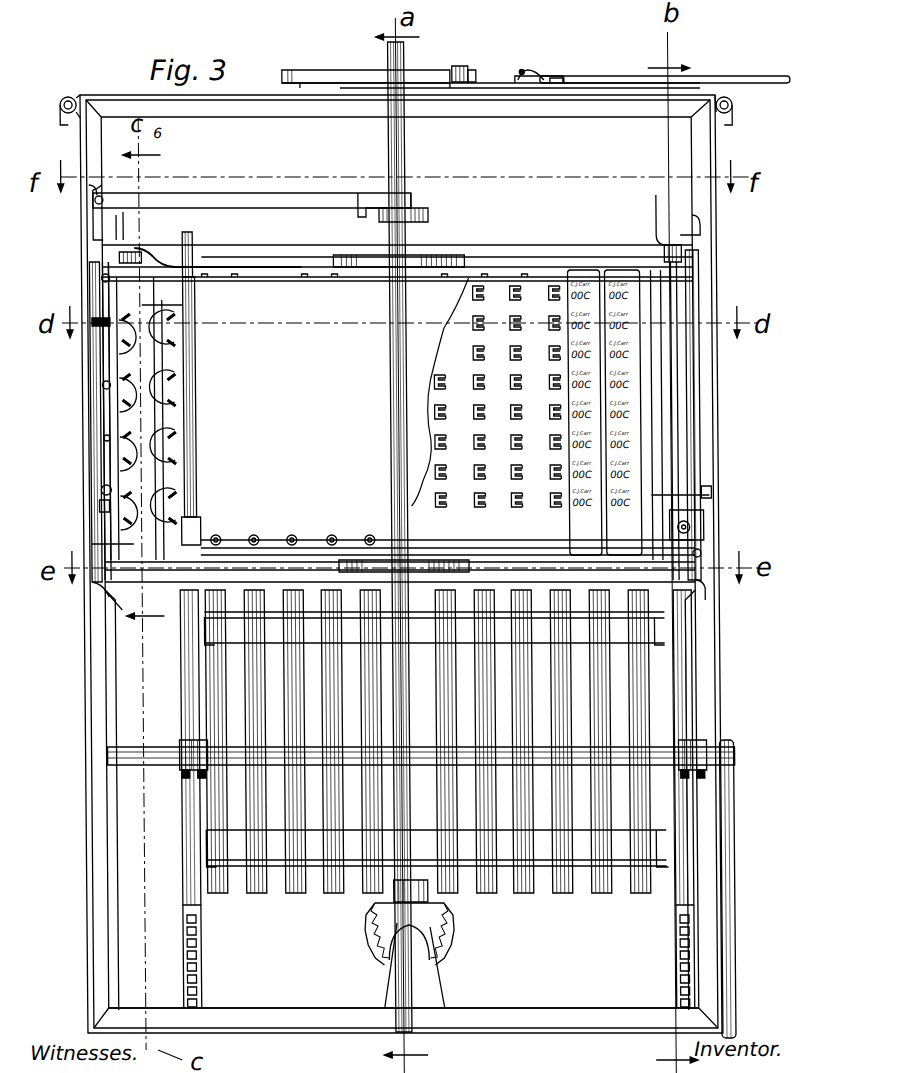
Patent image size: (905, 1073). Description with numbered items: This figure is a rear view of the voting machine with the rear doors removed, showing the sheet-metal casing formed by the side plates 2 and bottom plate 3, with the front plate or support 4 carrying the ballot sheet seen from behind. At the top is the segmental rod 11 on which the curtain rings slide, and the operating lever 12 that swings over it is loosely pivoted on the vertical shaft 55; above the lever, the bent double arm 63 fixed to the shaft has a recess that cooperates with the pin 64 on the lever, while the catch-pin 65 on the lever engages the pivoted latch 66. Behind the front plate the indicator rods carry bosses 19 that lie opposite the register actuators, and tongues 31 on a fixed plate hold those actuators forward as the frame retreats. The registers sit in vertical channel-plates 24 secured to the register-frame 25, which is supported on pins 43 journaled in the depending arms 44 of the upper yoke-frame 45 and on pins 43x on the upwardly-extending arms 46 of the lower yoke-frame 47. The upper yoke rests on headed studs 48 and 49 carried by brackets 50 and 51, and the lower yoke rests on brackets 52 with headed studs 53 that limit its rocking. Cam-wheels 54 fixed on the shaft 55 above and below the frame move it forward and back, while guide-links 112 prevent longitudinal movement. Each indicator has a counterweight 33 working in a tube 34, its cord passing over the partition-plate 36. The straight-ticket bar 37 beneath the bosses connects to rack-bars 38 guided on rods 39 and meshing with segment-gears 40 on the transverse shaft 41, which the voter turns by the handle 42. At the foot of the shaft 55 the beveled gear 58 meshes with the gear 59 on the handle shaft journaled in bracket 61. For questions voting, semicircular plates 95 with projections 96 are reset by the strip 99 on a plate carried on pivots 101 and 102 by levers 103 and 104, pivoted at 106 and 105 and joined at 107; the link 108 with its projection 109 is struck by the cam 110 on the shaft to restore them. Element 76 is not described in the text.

The side plates 2 is at (86, 792).
The bottom plate 3 is at (308, 1030).
The plate or support 4 is at (447, 416).
The segmental rod 11 is at (72, 97).
The operating arm or lever 12 is at (714, 84).
The boss or abutment 19 is at (293, 527).
The channel-plate 24 is at (604, 412).
The register-frame 25 is at (352, 278).
The tongues 31 is at (440, 406).
The counterweight 33 is at (228, 570).
The tube 34 is at (250, 700).
The partition-plate 36 is at (230, 664).
The straight-ticket bar 37 is at (430, 550).
The rack-bars 38 is at (194, 942).
The rods 39 is at (194, 382).
The segment-gears 40 is at (190, 910).
The shaft 41 is at (160, 766).
The handle 42 is at (728, 868).
The pins 43 is at (84, 306).
The pins 43x is at (722, 458).
The depending arms 44 is at (88, 266).
The upper yoke-frame 45 is at (542, 246).
The upwardly-extending arms 46 is at (96, 540).
The lower yoke-frame 47 is at (270, 562).
The headed stud 48 is at (662, 250).
The headed stud 49 is at (132, 250).
The bracket 50 is at (656, 205).
The bracket 51 is at (123, 223).
The brackets 52 is at (110, 598).
The headed studs 53 is at (704, 584).
The cam-wheels 54 is at (454, 256).
The vertical shaft 55 is at (406, 154).
The beveled gear 58 is at (424, 906).
The gear 59 is at (438, 940).
The bracket 61 is at (424, 990).
The double arm 63 is at (302, 72).
The pin 64 is at (460, 66).
The catch-pin 65 is at (524, 70).
The pivoted latch 66 is at (542, 78).
The lock box 76 is at (700, 518).
The semicircular plates 95 is at (144, 320).
The projections 96 is at (172, 318).
The resetting strip or plate 99 is at (175, 424).
The pivot 101 is at (100, 279).
The pivot 102 is at (98, 490).
The lever 103 is at (92, 218).
The lever 104 is at (104, 458).
The pivot 105 is at (100, 438).
The pivot 106 is at (96, 328).
The pivot 107 is at (100, 388).
The link 108 is at (252, 197).
The projection 109 is at (360, 216).
The cam 110 is at (436, 226).
The guide-links 112 is at (190, 262).